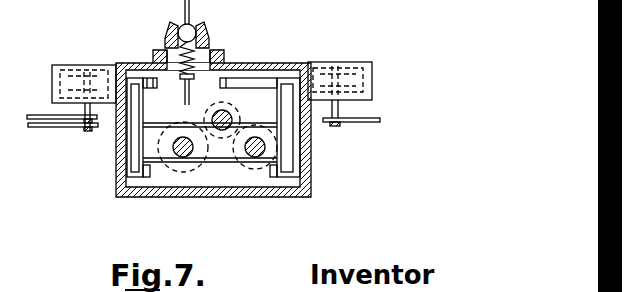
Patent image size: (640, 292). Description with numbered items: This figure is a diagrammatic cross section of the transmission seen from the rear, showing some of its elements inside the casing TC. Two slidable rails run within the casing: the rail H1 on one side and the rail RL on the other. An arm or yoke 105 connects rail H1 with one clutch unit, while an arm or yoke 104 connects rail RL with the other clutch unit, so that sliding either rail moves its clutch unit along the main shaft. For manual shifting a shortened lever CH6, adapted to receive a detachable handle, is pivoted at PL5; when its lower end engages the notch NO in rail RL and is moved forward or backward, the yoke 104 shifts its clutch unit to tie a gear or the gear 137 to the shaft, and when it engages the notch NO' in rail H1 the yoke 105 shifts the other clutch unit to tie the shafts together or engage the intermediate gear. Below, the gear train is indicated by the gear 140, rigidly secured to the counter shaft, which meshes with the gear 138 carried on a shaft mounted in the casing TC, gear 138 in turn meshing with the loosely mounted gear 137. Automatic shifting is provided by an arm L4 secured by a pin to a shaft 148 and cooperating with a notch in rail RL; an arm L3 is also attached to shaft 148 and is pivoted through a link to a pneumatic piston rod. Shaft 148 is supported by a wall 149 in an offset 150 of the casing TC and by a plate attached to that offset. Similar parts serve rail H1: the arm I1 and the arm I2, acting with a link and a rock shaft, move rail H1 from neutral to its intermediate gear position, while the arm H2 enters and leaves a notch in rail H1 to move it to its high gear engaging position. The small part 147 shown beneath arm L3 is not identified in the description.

The transmission casing TC is at (311, 190).
The slidable rail RL is at (311, 163).
The arm or yoke 105 is at (152, 120).
The arm or yoke 104 is at (246, 118).
The notch NO' is at (164, 93).
The notch NO is at (237, 93).
The pivot PL5 is at (197, 30).
The shortened lever CH6 is at (189, 4).
The gear 137 is at (183, 172).
The gear 138 is at (222, 165).
The gear 140 is at (268, 170).
The arm I2 is at (66, 72).
The arm H2 is at (60, 93).
The arm I1 is at (50, 131).
The slidable rail H1 is at (33, 115).
The offset 150 is at (372, 68).
The shaft 148 is at (335, 68).
The arm L4 is at (323, 63).
The wall 149 is at (348, 106).
The arm L3 is at (365, 122).
The contact 147 is at (335, 126).